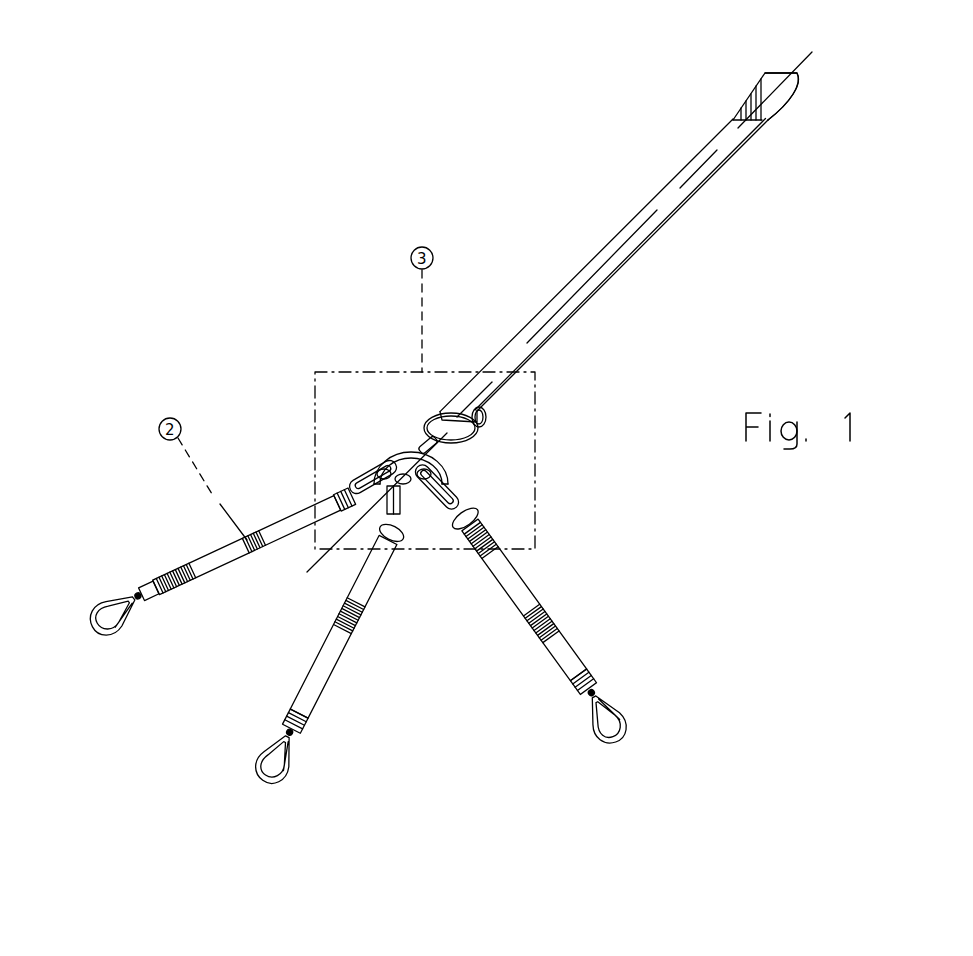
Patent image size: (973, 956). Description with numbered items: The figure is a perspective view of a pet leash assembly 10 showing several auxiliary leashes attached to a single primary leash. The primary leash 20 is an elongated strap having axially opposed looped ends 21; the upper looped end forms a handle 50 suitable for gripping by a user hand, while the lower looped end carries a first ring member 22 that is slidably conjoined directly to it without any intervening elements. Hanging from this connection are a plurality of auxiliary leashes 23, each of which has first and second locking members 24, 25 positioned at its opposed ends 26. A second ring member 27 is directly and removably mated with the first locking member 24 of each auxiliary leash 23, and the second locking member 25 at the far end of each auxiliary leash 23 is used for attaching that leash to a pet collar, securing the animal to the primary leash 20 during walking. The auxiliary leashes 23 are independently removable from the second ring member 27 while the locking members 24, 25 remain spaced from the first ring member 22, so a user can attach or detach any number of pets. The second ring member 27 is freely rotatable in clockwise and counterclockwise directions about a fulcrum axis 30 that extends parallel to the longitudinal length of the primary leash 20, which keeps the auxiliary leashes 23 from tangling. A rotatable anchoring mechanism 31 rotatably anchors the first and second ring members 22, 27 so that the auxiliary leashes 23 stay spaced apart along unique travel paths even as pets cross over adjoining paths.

The assembly 10 is at (165, 132).
The primary leash 20 is at (680, 200).
The looped ends 21 is at (798, 88).
The first ring member 22 is at (480, 436).
The auxiliary leashes 23 is at (180, 582).
The first locking member 24 is at (366, 480).
The second locking member 25 is at (103, 626).
The opposed ends 26 is at (337, 494).
The second ring member 27 is at (440, 460).
The fulcrum axis 30 is at (828, 54).
The rotatable anchoring mechanism 31 is at (406, 431).
The handle 50 is at (787, 90).